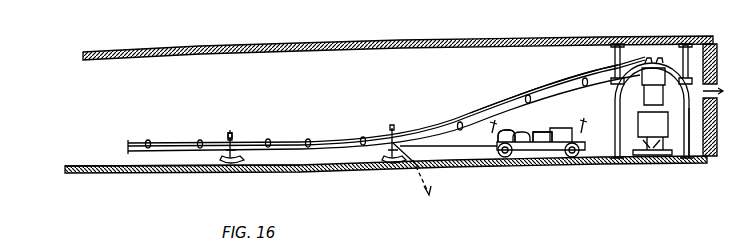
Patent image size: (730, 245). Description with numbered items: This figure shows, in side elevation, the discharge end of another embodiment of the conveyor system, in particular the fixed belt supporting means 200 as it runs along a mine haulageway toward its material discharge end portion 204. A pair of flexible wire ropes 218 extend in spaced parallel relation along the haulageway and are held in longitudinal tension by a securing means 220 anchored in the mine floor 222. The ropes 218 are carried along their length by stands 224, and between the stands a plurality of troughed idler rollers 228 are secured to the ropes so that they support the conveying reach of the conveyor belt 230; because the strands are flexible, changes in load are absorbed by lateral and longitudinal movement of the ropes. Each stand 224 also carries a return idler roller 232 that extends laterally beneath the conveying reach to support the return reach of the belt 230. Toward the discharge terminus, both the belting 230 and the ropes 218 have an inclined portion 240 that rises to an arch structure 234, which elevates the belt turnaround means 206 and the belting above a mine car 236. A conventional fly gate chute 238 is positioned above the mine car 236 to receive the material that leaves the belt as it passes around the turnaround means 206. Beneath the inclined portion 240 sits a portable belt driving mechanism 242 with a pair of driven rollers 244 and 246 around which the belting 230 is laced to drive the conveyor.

The fixed belt supporting means 200 is at (300, 122).
The material discharge end portion 204 is at (677, 55).
The belt turnaround means 206 is at (632, 65).
The flexible wire ropes 218 is at (232, 130).
The securing means 220 is at (418, 155).
The mine floor 222 is at (100, 163).
The stands 224 is at (236, 140).
The troughed idler rollers 228 is at (200, 140).
The conveyor belt 230 is at (330, 146).
The return idler roller 232 is at (240, 164).
The arch structure 234 is at (692, 138).
The mine car 236 is at (665, 138).
The fly gate chute 238 is at (648, 88).
The inclined portion 240 is at (530, 92).
The portable belt driving mechanism 242 is at (557, 148).
The roller 244 is at (525, 144).
The roller 246 is at (516, 148).